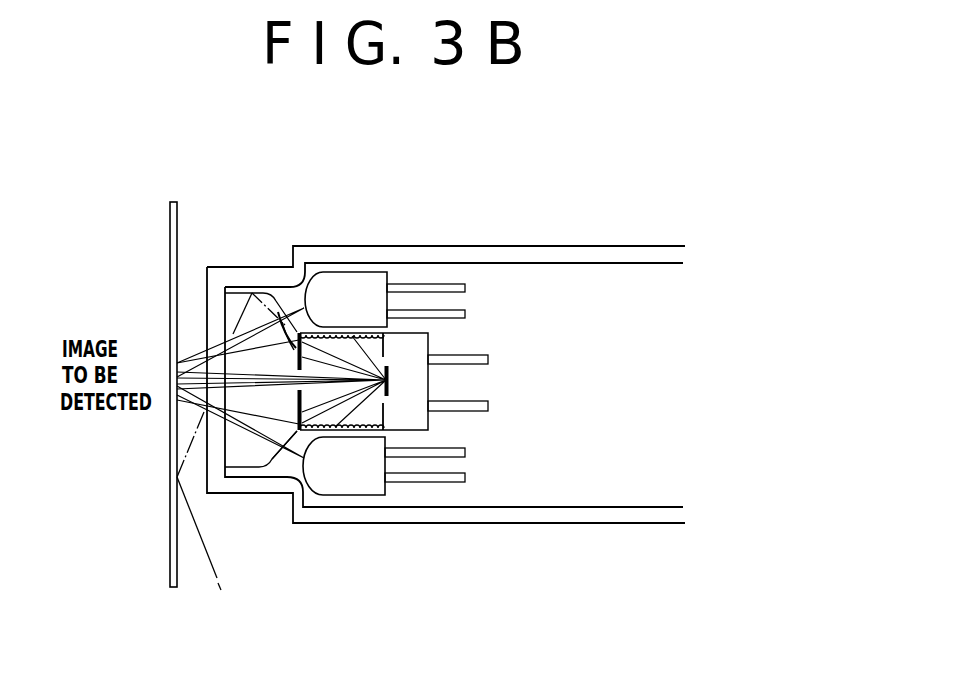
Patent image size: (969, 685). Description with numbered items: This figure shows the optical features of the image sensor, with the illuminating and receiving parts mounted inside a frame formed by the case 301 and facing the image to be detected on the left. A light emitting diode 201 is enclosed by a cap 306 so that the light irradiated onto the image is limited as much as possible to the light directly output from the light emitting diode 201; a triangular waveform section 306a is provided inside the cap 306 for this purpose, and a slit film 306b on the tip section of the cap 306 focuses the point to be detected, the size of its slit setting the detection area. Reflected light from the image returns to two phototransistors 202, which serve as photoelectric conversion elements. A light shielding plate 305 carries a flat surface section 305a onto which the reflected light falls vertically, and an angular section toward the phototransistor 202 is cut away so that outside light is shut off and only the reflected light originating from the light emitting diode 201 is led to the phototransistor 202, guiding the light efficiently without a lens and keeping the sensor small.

The light emitting diode 201 is at (428, 420).
The phototransistor 202 is at (362, 283).
The case 301 is at (498, 256).
The light shielding plate 305 is at (236, 457).
The flat surface section 305a is at (275, 465).
The cap 306 is at (316, 334).
The triangular waveform section 306a is at (383, 351).
The slit film 306b is at (286, 337).